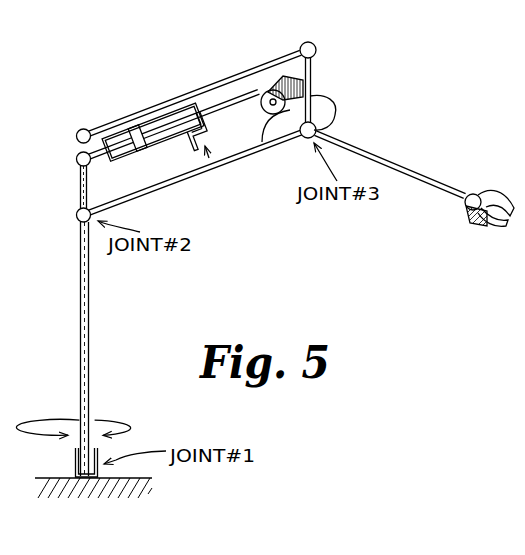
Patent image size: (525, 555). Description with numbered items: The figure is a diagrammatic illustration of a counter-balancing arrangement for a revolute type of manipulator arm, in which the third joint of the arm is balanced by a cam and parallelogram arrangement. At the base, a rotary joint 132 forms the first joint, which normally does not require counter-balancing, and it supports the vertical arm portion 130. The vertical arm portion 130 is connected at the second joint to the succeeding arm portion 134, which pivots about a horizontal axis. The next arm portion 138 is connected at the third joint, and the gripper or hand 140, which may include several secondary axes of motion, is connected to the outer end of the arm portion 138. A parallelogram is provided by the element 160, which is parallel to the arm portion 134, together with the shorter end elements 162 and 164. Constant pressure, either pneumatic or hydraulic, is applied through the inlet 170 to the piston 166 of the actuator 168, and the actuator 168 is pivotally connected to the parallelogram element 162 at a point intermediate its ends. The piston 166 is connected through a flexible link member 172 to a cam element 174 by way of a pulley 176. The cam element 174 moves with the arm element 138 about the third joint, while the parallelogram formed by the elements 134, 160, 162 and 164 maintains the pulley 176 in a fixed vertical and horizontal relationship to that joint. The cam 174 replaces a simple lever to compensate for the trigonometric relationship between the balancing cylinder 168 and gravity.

The vertical arm portion 130 is at (79, 334).
The rotary joint 132 is at (76, 463).
The arm portion 134 is at (197, 173).
The arm portion 138 is at (436, 186).
The gripper or hand 140 is at (470, 207).
The parallelogram element 160 is at (223, 84).
The parallelogram end element 162 is at (78, 182).
The parallelogram end element 164 is at (314, 77).
The piston 166 is at (140, 143).
The actuator 168 is at (171, 108).
The inlet 170 is at (192, 143).
The flexible link member 172 is at (255, 94).
The cam element 174 is at (324, 118).
The pulley 176 is at (264, 106).